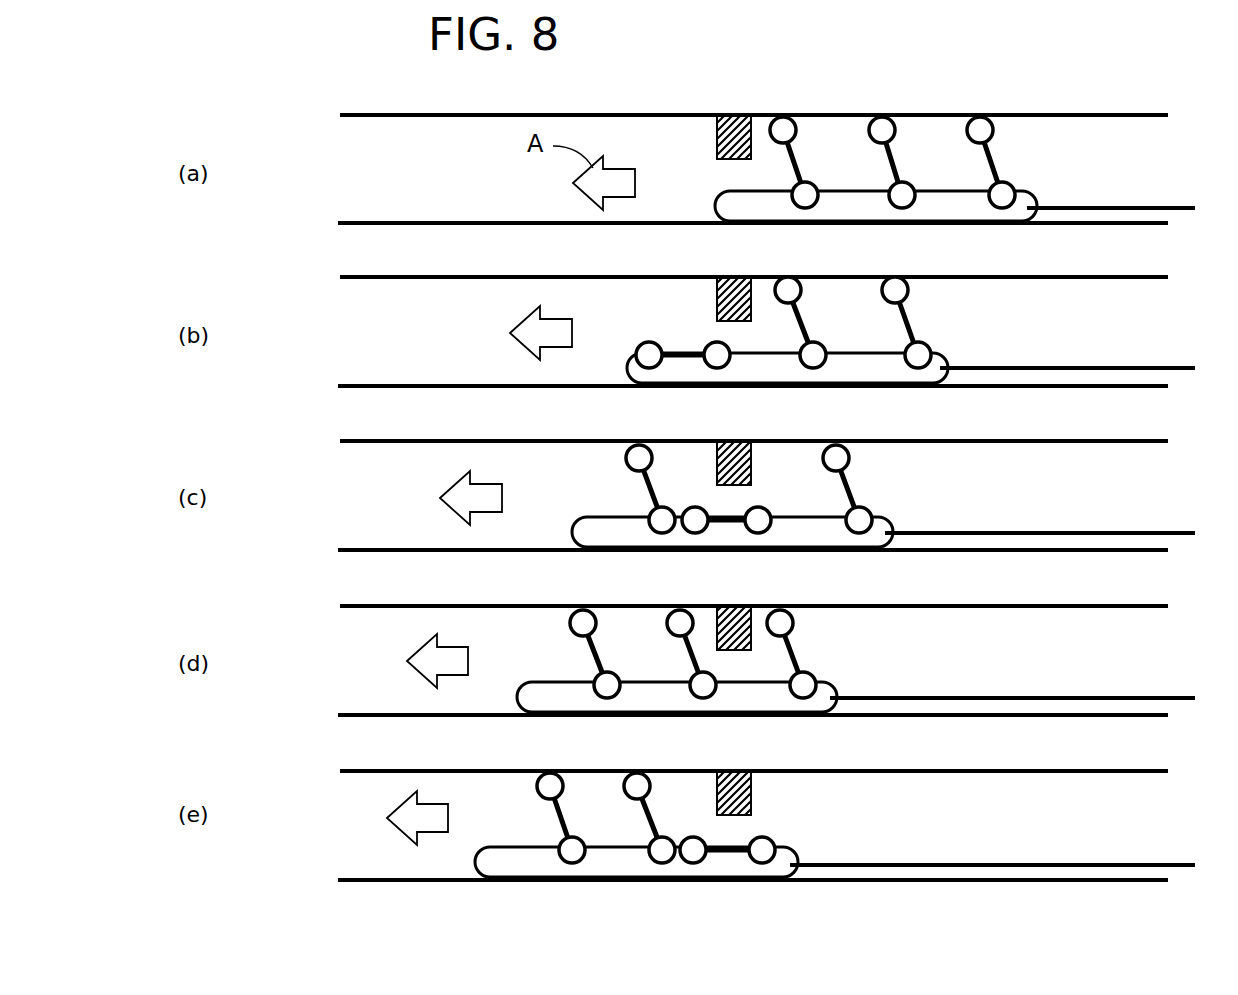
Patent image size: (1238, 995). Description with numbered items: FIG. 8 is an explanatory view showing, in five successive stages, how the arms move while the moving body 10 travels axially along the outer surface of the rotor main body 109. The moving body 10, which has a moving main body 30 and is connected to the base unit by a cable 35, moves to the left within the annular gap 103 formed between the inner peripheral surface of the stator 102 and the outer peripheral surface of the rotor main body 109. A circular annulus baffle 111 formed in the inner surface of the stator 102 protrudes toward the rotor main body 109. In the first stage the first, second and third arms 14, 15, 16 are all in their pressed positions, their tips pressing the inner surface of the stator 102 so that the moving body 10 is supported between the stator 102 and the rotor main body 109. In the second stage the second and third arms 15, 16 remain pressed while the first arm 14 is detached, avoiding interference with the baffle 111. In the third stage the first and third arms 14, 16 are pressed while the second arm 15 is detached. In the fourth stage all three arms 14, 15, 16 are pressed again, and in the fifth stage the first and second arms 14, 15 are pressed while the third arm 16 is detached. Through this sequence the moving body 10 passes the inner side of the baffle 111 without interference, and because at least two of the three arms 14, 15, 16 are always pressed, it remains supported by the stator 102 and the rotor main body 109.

The moving body 10 is at (973, 501).
The first arm 14 is at (684, 490).
The second arm 15 is at (779, 490).
The third arm 16 is at (873, 490).
The moving main body 30 is at (730, 525).
The cable 35 is at (992, 513).
The stator 102 is at (725, 462).
The annular gap 103 is at (333, 502).
The rotor main body 109 is at (727, 536).
The baffle 111 is at (697, 442).